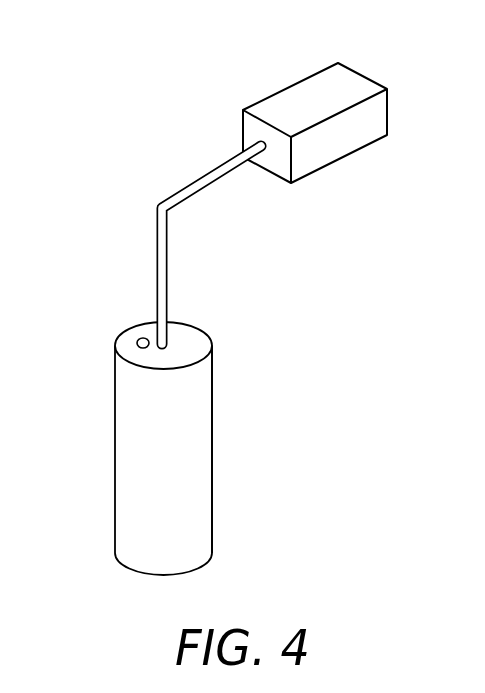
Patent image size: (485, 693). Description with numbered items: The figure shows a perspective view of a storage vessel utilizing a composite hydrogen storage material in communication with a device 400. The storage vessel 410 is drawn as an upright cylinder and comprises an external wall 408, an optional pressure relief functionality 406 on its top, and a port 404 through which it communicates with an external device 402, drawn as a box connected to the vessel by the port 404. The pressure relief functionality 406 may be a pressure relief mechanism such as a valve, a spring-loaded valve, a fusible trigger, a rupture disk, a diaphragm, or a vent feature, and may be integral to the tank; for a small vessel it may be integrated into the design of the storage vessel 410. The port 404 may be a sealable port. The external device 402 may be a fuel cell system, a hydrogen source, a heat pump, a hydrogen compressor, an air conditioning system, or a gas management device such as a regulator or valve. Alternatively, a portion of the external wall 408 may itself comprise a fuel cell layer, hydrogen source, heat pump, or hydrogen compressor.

The storage vessel utilizing a composite hydrogen storage material in communication 400 is at (123, 73).
The external device 402 is at (367, 73).
The port 404 is at (168, 280).
The pressure relief functionality 406 is at (136, 341).
The external wall 408 is at (113, 447).
The storage vessel 410 is at (212, 448).